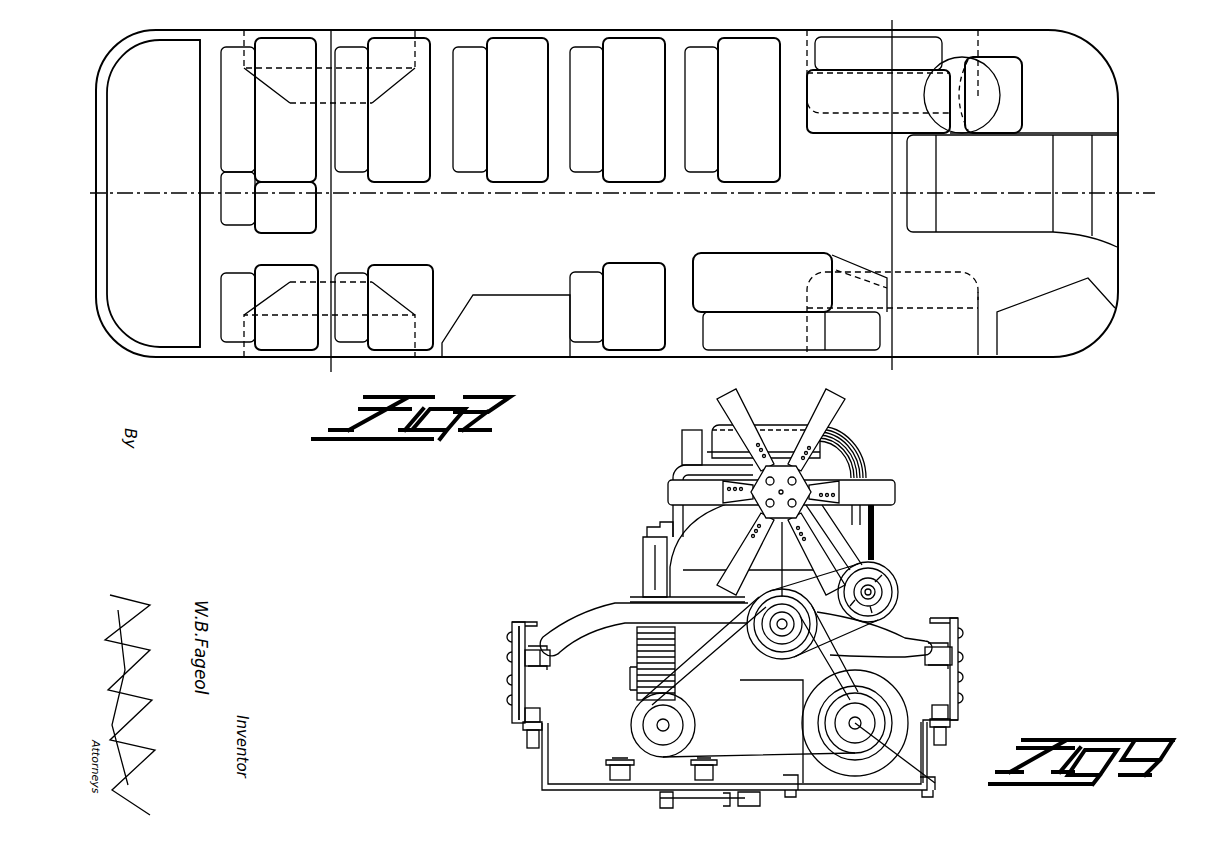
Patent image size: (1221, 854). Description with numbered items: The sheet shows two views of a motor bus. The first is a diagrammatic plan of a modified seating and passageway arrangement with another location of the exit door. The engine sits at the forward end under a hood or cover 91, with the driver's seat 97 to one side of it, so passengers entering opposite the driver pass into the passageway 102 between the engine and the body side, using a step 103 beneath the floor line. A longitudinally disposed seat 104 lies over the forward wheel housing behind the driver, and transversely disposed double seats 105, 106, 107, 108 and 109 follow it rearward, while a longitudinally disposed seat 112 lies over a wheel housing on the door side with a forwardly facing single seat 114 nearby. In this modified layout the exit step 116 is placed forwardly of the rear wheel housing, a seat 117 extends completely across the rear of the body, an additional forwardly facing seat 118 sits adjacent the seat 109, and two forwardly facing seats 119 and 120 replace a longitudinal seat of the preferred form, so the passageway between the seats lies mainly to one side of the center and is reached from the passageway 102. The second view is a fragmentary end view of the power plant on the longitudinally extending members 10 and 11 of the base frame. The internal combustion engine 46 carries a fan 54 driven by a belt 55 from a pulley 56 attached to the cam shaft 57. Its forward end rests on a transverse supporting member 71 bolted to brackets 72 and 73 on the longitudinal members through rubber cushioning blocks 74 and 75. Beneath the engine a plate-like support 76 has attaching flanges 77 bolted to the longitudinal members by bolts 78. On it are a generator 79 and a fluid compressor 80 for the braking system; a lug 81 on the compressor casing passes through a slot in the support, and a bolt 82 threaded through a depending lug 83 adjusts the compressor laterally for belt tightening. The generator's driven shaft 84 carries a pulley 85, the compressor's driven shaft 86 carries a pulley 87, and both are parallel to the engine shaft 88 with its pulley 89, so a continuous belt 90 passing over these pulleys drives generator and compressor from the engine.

In FIG. 3, the hood or cover 91 is at (1012, 190).
In FIG. 3, the driver's seat 97 is at (1010, 112).
In FIG. 3, the passageway 102 is at (958, 253).
In FIG. 3, the step 103 is at (1075, 347).
In FIG. 3, the longitudinally disposed seat 104 is at (872, 128).
In FIG. 3, the transversely disposed double seat 105 is at (702, 171).
In FIG. 3, the transversely disposed double seat 106 is at (607, 171).
In FIG. 3, the transversely disposed double seat 107 is at (510, 171).
In FIG. 3, the transversely disposed double seat 108 is at (403, 171).
In FIG. 3, the transversely disposed double seat 109 is at (268, 110).
In FIG. 3, the longitudinally disposed seat 112 is at (768, 260).
In FIG. 3, the forwardly facing single seat 114 is at (630, 272).
In FIG. 3, the exit step 116 is at (535, 347).
In FIG. 3, the seat 117 is at (188, 283).
In FIG. 3, the forwardly facing seat 118 is at (307, 217).
In FIG. 3, the forwardly facing seat 119 is at (284, 275).
In FIG. 3, the forwardly facing seat 120 is at (400, 275).
In FIG. 9, the longitudinally extending member 10 is at (958, 692).
In FIG. 9, the longitudinally extending member 11 is at (511, 690).
In FIG. 9, the internal combustion engine 46 is at (773, 408).
In FIG. 9, the fan 54 is at (720, 398).
In FIG. 9, the belt 55 is at (874, 528).
In FIG. 9, the pulley 56 is at (873, 580).
In FIG. 9, the cam shaft 57 is at (880, 598).
In FIG. 9, the transverse supporting member 71 is at (580, 614).
In FIG. 9, the bracket 72 is at (525, 700).
In FIG. 9, the bracket 73 is at (950, 690).
In FIG. 9, the rubber cushioning block 74 is at (550, 661).
In FIG. 9, the rubber cushioning block 75 is at (940, 654).
In FIG. 9, the support 76 is at (548, 770).
In FIG. 9, the attaching flange 77 is at (522, 735).
In FIG. 9, the bolt 78 is at (538, 707).
In FIG. 9, the generator 79 is at (897, 742).
In FIG. 9, the fluid compressor 80 is at (633, 668).
In FIG. 9, the lug 81 is at (660, 798).
In FIG. 9, the bolt 82 is at (700, 798).
In FIG. 9, the lug 83 is at (740, 808).
In FIG. 9, the driven shaft 84 is at (930, 780).
In FIG. 9, the pulley 85 is at (830, 709).
In FIG. 9, the driven shaft 86 is at (658, 725).
In FIG. 9, the pulley 87 is at (696, 692).
In FIG. 9, the engine shaft 88 is at (782, 626).
In FIG. 9, the pulley 89 is at (770, 609).
In FIG. 9, the continuous belt 90 is at (750, 750).